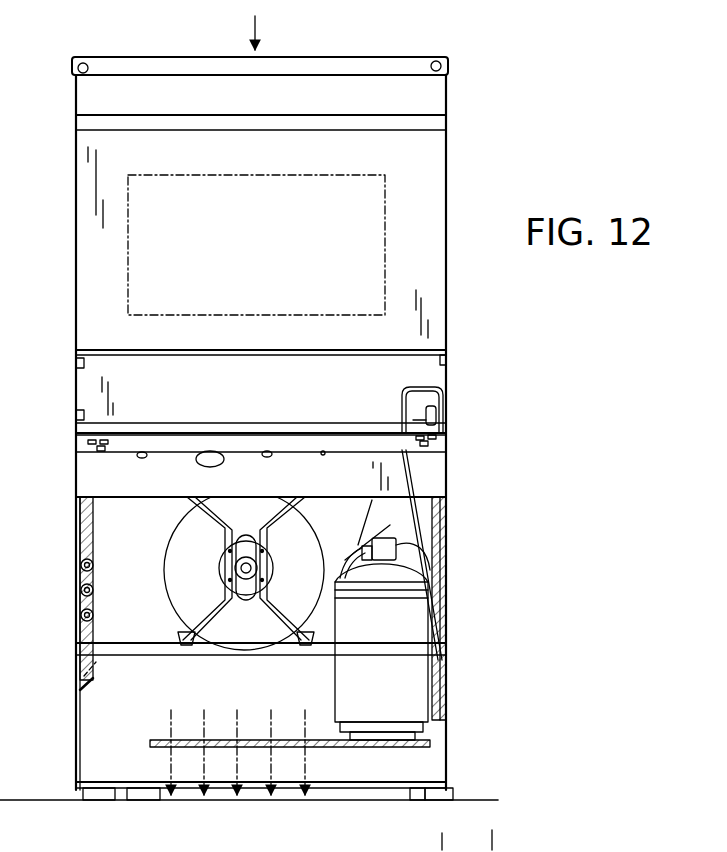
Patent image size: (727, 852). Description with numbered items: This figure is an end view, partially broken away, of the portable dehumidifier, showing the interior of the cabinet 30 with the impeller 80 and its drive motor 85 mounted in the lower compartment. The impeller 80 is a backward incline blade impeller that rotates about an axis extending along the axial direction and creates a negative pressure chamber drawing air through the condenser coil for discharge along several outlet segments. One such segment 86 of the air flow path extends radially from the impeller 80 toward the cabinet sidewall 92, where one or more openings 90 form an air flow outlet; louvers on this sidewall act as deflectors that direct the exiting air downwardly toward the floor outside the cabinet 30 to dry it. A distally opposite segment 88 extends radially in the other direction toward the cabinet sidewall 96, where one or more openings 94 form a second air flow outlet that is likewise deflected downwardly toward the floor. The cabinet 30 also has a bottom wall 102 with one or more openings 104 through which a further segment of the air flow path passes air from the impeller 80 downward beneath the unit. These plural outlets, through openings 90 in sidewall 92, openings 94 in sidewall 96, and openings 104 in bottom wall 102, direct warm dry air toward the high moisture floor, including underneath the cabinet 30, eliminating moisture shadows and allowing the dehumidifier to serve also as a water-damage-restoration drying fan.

The cabinet 30 is at (76, 209).
The impeller 80 is at (178, 598).
The motor 85 is at (218, 572).
The air flow path segment 86 is at (480, 703).
The air flow path segment 88 is at (52, 704).
The openings 90 is at (448, 594).
The cabinet sidewall 92 is at (447, 508).
The openings 94 is at (63, 632).
The cabinet sidewall 96 is at (77, 476).
The bottom wall 102 is at (157, 748).
The openings 104 is at (202, 748).